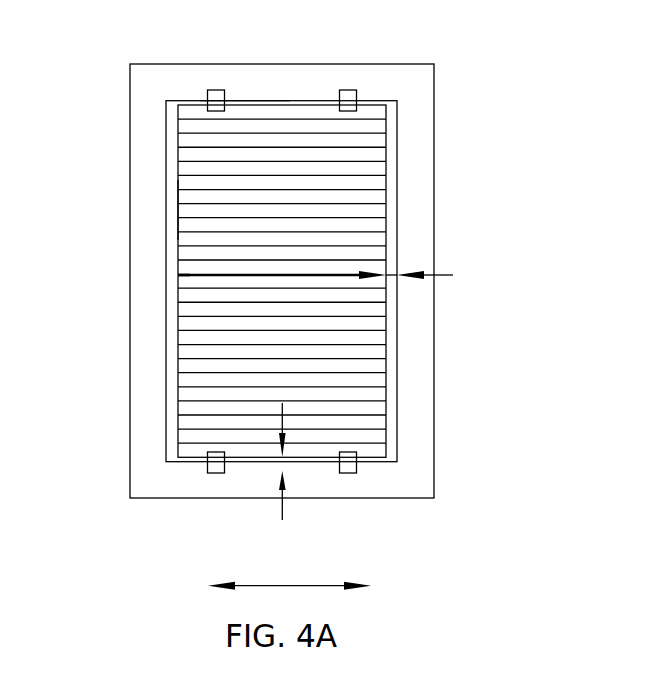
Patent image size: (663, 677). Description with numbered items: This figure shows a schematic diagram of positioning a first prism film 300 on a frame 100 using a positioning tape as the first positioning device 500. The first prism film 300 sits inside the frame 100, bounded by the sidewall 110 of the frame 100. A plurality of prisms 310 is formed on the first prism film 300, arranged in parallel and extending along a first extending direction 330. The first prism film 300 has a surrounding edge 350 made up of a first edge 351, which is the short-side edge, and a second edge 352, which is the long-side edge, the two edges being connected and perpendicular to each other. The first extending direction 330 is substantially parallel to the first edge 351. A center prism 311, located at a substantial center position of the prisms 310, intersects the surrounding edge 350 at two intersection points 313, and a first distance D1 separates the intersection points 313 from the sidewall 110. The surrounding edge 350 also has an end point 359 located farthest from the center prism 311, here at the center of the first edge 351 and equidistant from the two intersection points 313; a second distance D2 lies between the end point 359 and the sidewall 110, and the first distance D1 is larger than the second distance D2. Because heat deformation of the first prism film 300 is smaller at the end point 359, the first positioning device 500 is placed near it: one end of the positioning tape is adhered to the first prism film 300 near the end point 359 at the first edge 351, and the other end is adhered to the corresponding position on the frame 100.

The frame 100 is at (406, 437).
The sidewall 110 is at (402, 392).
The first prism film 300 is at (197, 382).
The prisms 310 is at (375, 170).
The center prism 311 is at (210, 273).
The intersection points 313 is at (177, 275).
The first extending direction 330 is at (289, 576).
The surrounding edge 350 is at (140, 0).
The first edge 351 is at (242, 100).
The second edge 352 is at (178, 211).
The end point 359 is at (300, 88).
The first positioning device 500 is at (356, 469).
The first distance D1 is at (393, 272).
The second distance D2 is at (283, 461).